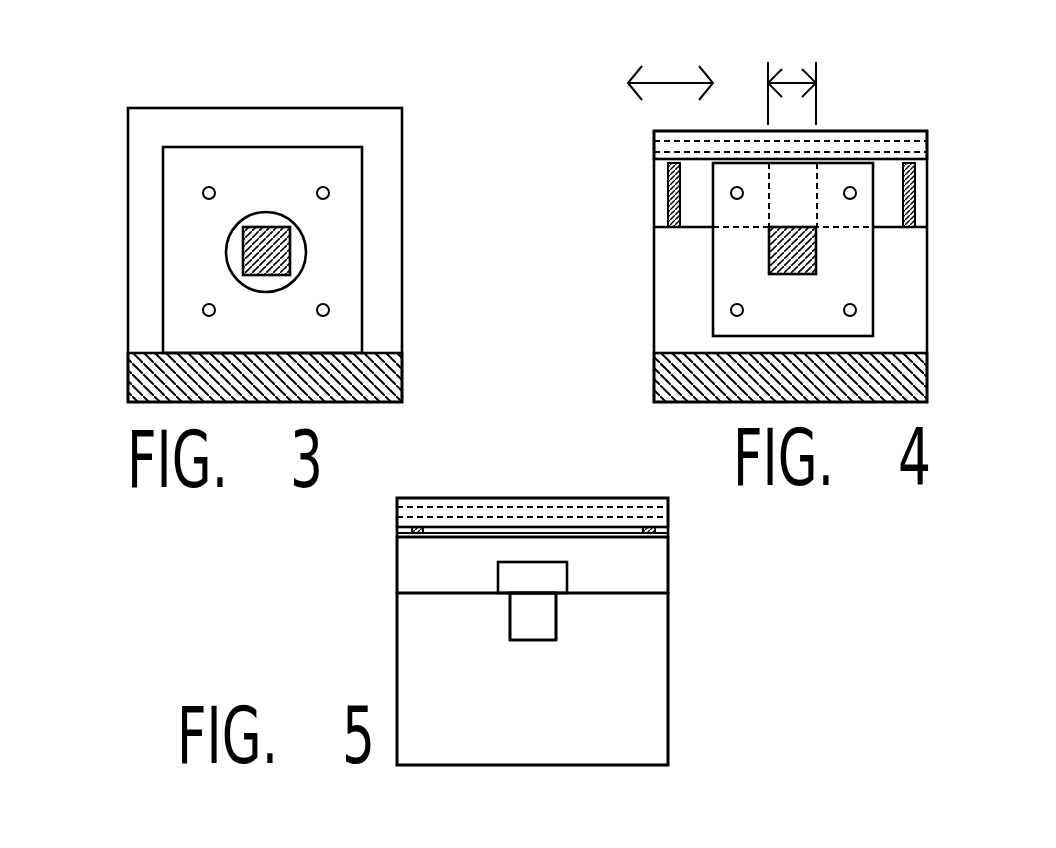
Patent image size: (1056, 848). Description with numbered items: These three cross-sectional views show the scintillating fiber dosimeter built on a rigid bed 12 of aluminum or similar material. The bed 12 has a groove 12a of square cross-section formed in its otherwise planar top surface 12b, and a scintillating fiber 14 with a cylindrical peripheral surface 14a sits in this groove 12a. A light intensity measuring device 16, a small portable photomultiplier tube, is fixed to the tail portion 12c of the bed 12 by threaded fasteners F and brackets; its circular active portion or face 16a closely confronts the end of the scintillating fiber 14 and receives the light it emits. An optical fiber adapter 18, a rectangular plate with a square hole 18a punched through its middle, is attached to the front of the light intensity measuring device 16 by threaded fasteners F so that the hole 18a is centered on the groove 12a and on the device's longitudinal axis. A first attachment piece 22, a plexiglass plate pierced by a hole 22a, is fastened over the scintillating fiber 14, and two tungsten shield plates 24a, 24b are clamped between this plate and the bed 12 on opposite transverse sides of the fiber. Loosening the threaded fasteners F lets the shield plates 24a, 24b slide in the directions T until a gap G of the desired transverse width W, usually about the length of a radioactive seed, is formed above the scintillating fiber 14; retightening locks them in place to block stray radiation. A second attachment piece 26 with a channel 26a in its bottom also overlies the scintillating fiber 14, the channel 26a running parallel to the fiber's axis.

In FIG. 4, the bed 12 is at (898, 312).
In FIG. 5, the bed 12 is at (590, 645).
In FIG. 5, the groove 12a is at (512, 633).
In FIG. 5, the top surface 12b is at (642, 588).
In FIG. 3, the tail portion 12c is at (370, 380).
In FIG. 3, the scintillating fiber 14 is at (246, 264).
In FIG. 4, the scintillating fiber 14 is at (815, 247).
In FIG. 5, the scintillating fiber 14 is at (537, 614).
In FIG. 5, the cylindrical peripheral surface 14a is at (537, 590).
In FIG. 3, the light intensity measuring device 16 is at (275, 175).
In FIG. 3, the active portion or face 16a is at (297, 252).
In FIG. 4, the optical fiber adapter 18 is at (735, 284).
In FIG. 4, the square hole 18a is at (812, 274).
In FIG. 4, the first attachment piece 22 is at (913, 133).
In FIG. 4, the hole 22a is at (890, 148).
In FIG. 4, the shield plate 24a is at (695, 190).
In FIG. 4, the shield plate 24b is at (885, 203).
In FIG. 5, the second attachment piece 26 is at (617, 571).
In FIG. 5, the channel 26a is at (552, 560).
In FIG. 4, the threaded fasteners F is at (668, 200).
In FIG. 4, the gap G is at (793, 195).
In FIG. 4, the directions of shield plate adjustment T is at (670, 64).
In FIG. 4, the transverse width of the gap W is at (789, 77).